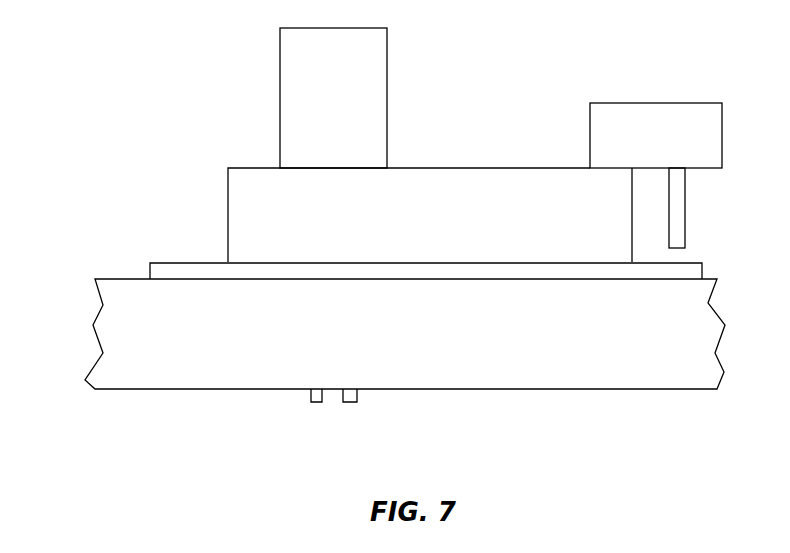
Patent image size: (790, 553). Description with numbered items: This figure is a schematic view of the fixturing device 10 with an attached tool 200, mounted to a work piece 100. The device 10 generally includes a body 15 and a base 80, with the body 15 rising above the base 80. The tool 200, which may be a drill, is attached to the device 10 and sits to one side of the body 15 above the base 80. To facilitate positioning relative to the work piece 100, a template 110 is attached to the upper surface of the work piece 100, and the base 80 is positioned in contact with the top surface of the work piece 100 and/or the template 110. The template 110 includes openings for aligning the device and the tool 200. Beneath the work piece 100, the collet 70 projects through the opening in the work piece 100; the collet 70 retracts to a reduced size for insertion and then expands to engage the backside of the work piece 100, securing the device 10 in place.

The fixturing device 10 is at (176, 97).
The body 15 is at (308, 77).
The base 80 is at (473, 198).
The tool 200 is at (683, 103).
The template 110 is at (198, 262).
The work piece 100 is at (180, 357).
The collet 70 is at (310, 393).